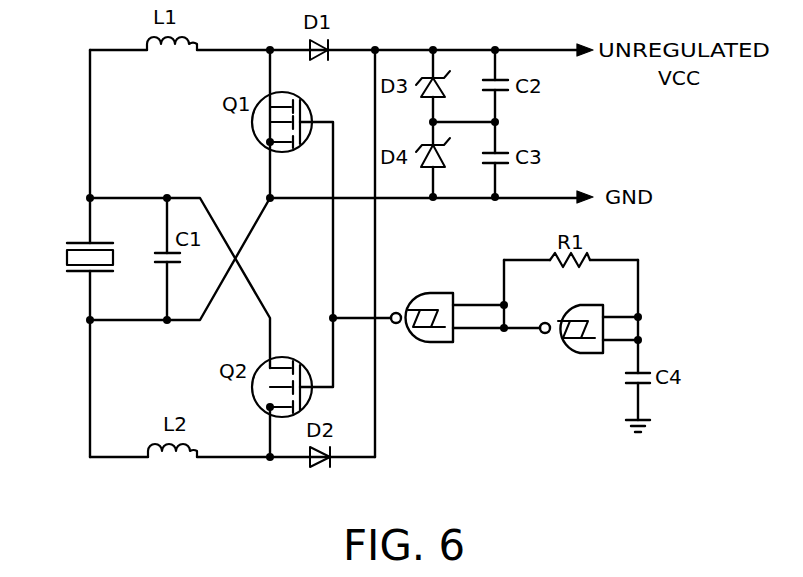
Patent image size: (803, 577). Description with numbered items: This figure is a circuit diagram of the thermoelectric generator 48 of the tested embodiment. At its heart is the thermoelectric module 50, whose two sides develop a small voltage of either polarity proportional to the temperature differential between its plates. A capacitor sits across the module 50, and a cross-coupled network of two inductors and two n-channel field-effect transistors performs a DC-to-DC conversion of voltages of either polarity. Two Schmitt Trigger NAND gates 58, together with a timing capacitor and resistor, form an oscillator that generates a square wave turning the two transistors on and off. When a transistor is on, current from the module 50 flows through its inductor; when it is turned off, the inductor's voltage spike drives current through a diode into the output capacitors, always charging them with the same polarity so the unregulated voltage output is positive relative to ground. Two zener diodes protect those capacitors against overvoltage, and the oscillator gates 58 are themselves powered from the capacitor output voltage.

The thermoelectric generator 48 is at (66, 190).
The thermoelectric module 50 is at (70, 315).
The Schmitt Trigger NAND gates 58 is at (437, 342).